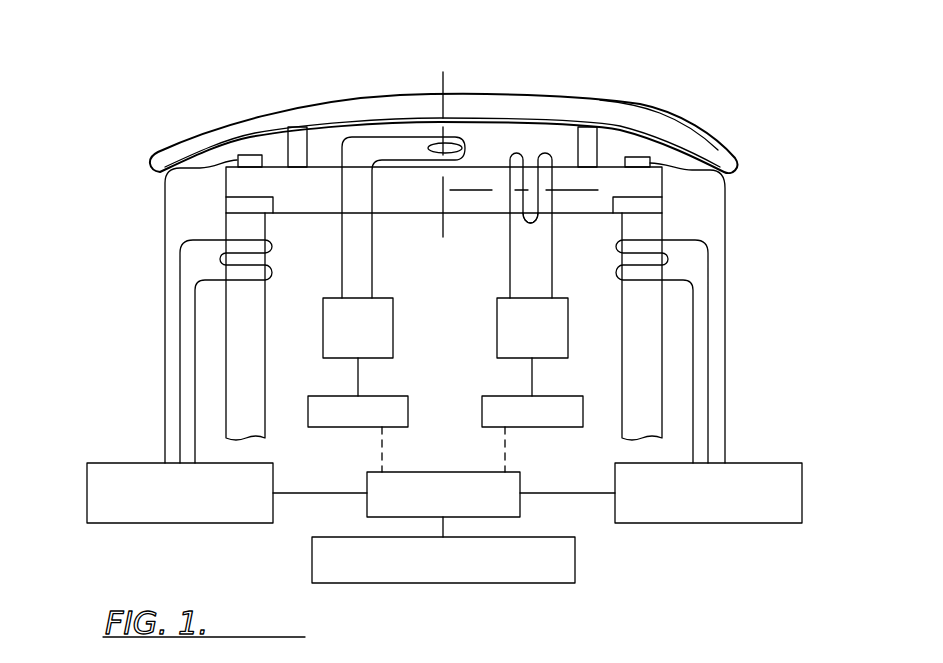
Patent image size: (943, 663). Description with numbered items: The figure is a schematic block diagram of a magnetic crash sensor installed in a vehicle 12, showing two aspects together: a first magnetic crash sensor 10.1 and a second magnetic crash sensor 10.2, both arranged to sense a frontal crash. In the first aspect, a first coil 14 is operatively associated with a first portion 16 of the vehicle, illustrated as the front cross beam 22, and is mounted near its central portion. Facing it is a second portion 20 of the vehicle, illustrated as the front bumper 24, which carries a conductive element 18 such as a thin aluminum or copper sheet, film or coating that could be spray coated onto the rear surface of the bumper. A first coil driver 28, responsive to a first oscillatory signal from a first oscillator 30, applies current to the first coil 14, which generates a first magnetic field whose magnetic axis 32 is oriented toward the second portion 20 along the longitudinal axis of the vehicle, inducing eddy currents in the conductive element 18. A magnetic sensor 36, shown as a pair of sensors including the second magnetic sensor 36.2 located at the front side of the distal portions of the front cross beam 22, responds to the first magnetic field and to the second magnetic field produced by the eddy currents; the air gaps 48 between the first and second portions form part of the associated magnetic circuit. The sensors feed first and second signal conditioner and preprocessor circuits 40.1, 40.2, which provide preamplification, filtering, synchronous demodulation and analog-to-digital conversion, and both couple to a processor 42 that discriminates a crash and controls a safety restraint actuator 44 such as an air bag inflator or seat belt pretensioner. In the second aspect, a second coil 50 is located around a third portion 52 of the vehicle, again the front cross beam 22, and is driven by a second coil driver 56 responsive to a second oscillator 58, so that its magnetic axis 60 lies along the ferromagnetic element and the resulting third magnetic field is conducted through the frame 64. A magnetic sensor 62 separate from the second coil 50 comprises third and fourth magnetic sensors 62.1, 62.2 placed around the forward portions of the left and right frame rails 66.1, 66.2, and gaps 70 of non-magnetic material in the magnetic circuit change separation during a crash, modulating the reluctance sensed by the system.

The magnetic crash sensor (first aspect) 10.1 is at (693, 88).
The magnetic crash sensor (second aspect) 10.2 is at (784, 25).
The vehicle 12 is at (188, 102).
The first coil 14 is at (463, 142).
The first portion of the vehicle 16 is at (445, 180).
The conductive element 18 is at (252, 138).
The second portion of the vehicle 20 is at (417, 78).
The front cross beam 22 is at (565, 215).
The front bumper 24 is at (617, 101).
The first coil driver 28 is at (388, 350).
The first oscillator 30 is at (365, 427).
The magnetic axis of the first coil 32 is at (433, 118).
The magnetic sensor 36 is at (247, 160).
The second magnetic sensor 36.2 is at (743, 132).
The first signal conditioner and preprocessor circuit 40.1 is at (217, 518).
The second signal conditioner and preprocessor circuit 40.2 is at (680, 523).
The processor 42 is at (383, 503).
The safety restraint actuator 44 is at (575, 578).
The air gaps 48 is at (183, 187).
The second coil 50 is at (583, 127).
The third portion of the vehicle 52 is at (500, 217).
The second coil driver 56 is at (502, 323).
The second oscillator 58 is at (533, 423).
The magnetic axis of the second coil 60 is at (488, 190).
The magnetic sensor 62 is at (442, 351).
The third magnetic sensor 62.1 is at (180, 285).
The fourth magnetic sensor 62.2 is at (675, 262).
The frame 64 is at (448, 326).
The left frame rail 66.1 is at (230, 377).
The right frame rail 66.2 is at (650, 377).
The gaps 70 is at (233, 207).